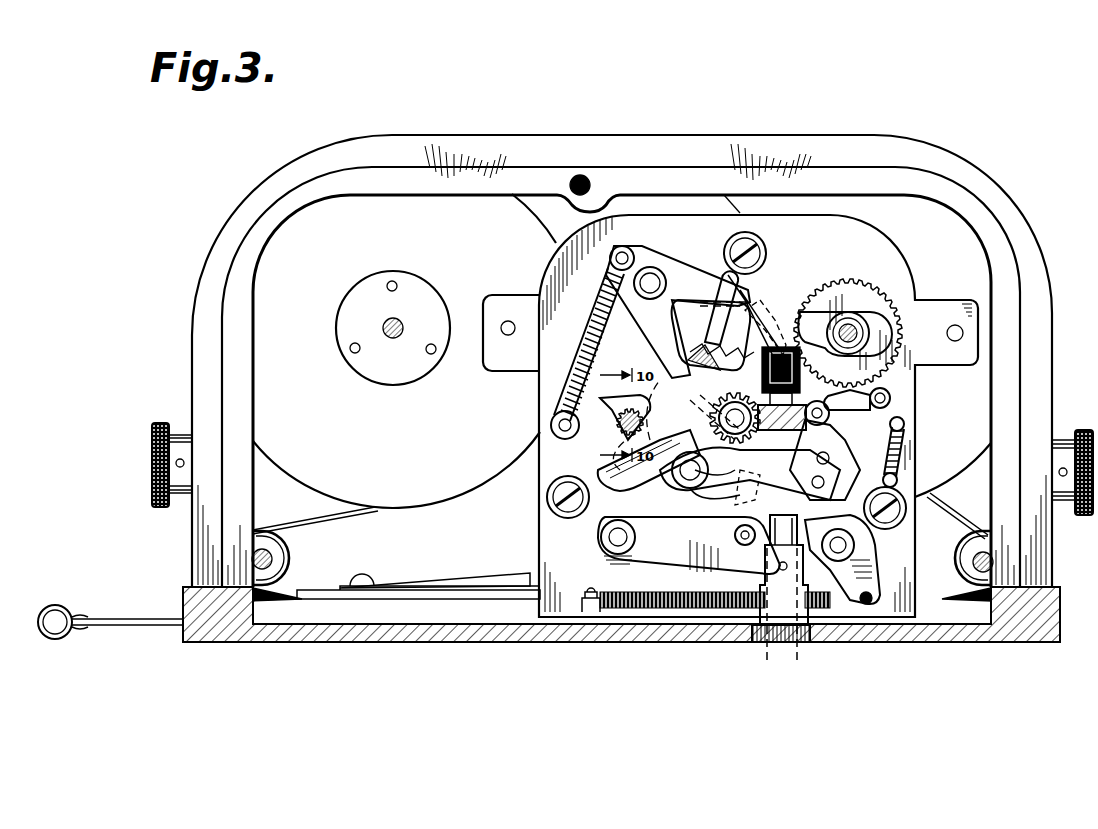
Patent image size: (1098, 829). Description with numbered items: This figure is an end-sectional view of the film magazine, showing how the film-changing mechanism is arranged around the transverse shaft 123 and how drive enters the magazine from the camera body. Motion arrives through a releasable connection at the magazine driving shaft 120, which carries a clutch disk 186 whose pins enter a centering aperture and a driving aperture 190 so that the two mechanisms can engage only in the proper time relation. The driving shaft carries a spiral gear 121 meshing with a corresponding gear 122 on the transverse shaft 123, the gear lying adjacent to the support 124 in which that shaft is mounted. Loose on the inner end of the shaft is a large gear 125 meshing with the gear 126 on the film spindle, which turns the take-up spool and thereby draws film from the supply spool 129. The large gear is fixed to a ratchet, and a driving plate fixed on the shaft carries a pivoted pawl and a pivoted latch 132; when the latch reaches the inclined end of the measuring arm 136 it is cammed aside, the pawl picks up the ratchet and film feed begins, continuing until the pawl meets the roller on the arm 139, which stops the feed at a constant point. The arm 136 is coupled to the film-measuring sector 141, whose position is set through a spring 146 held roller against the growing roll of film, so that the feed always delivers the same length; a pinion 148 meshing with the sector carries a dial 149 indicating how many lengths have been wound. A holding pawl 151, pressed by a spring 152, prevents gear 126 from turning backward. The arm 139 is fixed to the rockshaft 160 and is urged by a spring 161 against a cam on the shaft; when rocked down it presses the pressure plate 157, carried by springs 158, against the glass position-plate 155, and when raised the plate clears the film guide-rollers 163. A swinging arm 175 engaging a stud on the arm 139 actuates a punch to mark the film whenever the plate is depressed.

The magazine driving shaft 120 is at (772, 553).
The spiral gear 121 is at (770, 418).
The gear 122 is at (700, 500).
The transverse shaft 123 is at (845, 334).
The support 124 is at (770, 262).
The large gear 125 is at (712, 290).
The gear on the film spindle 126 is at (852, 284).
The supply spool 129 is at (404, 351).
The pivoted latch 132 is at (830, 445).
The measuring arm 136 is at (711, 370).
The pressure arm 139 is at (730, 518).
The film-measuring sector 141 is at (658, 332).
The spring 146 is at (594, 330).
The pinion 148 is at (618, 432).
The dial 149 is at (550, 424).
The holding pawl 151 is at (897, 418).
The spring 152 is at (908, 447).
The glass position-plate 155 is at (420, 622).
The pressure plate 157 is at (400, 585).
The springs 158 is at (505, 578).
The rockshaft 160 is at (840, 548).
The spring 161 is at (645, 600).
The film guide-rollers 163 is at (288, 553).
The swinging arm 175 is at (630, 560).
The clutch disk 186 is at (802, 642).
The driving aperture 190 is at (771, 620).